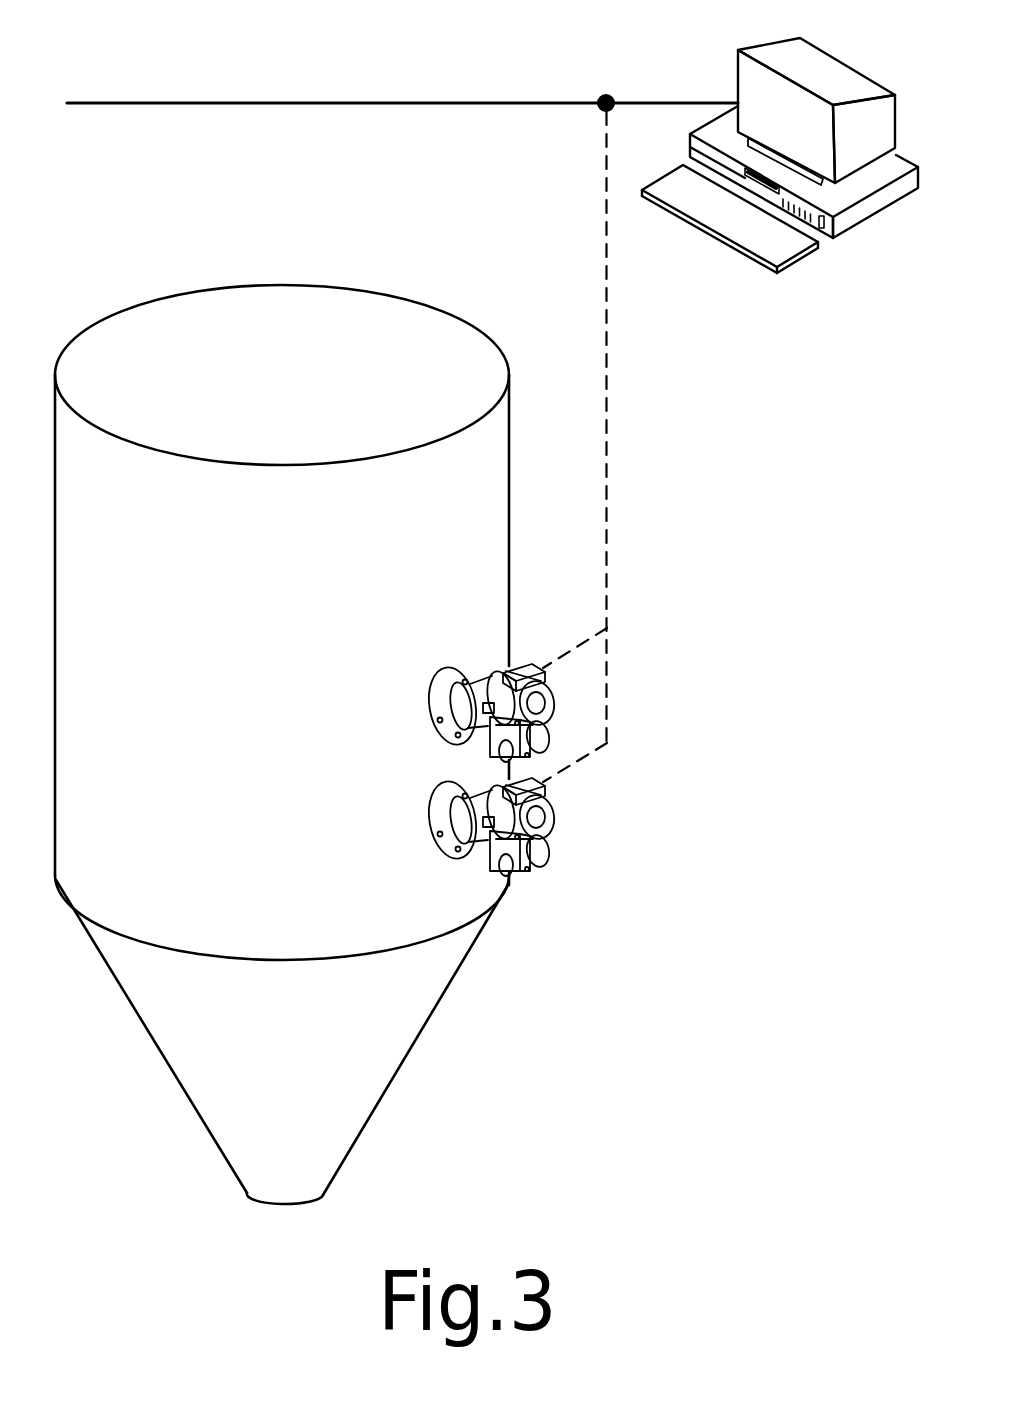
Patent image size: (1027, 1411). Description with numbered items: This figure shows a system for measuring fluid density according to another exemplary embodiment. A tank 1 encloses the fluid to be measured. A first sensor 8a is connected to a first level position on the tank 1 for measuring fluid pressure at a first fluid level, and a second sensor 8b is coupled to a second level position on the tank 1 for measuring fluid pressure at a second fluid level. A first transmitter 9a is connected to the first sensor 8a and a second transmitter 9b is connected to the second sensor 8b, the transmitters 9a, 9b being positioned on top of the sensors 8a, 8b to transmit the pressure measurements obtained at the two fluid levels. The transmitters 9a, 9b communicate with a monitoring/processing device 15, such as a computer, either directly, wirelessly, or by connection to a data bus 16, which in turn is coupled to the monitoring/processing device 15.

The tank 1 is at (53, 463).
The first sensor 8a is at (546, 751).
The second sensor 8b is at (535, 867).
The first transmitter 9a is at (542, 668).
The second transmitter 9b is at (552, 797).
The monitoring/processing device 15 is at (760, 47).
The data bus 16 is at (392, 102).